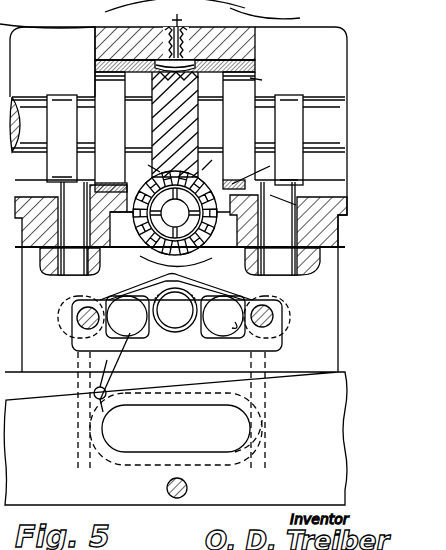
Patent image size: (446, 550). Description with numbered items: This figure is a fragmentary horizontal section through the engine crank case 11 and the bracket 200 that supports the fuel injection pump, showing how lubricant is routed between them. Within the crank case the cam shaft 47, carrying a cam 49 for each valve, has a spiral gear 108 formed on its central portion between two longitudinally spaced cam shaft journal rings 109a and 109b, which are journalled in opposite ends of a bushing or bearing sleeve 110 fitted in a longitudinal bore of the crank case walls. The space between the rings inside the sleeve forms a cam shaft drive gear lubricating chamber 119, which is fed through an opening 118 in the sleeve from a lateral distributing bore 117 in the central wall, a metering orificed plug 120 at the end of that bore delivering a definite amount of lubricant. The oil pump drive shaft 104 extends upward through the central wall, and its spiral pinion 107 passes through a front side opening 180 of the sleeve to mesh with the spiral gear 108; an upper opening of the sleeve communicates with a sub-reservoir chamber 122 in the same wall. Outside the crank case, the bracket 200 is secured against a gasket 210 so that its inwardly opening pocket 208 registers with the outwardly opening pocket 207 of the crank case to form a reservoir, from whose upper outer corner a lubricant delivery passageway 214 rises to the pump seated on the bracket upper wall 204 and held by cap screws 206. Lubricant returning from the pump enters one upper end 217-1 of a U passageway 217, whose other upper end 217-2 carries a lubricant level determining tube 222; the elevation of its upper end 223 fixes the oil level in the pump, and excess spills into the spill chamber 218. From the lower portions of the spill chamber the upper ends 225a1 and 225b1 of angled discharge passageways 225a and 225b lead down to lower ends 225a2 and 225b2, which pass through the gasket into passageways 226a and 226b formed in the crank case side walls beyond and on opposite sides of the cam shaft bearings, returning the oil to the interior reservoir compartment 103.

The compartment 103 is at (52, 62).
The bushing or bearing sleeve 110 is at (92, 64).
The opening 118 is at (158, 62).
The lateral distributing bore 117 is at (180, 25).
The metering orificed plug 120 is at (190, 22).
The cam shaft drive gear lubricating chamber 119 is at (298, 199).
The cam shaft journal ring 109a is at (112, 132).
The cam shaft journal ring 109b is at (241, 130).
The spiral gear 108 is at (178, 118).
The spiral pinion or gear 107 is at (212, 160).
The cam shaft 47 is at (320, 150).
The cam 49 is at (50, 175).
The front side opening 180 is at (265, 171).
The sub-reservoir chamber 122 is at (280, 194).
The passageway 226a is at (85, 215).
The passageway 226b is at (348, 196).
The crank case 11 is at (340, 222).
The drive shaft 104 is at (170, 222).
The outwardly opening pocket 207 is at (214, 218).
The gasket 210 is at (22, 262).
The lower end of discharge passageway 225a2 is at (72, 272).
The lower end of discharge passageway 225b2 is at (285, 270).
The spill chamber 218 is at (160, 286).
The inwardly opening pocket 208 is at (205, 258).
The upper end of discharge passageway 225a1 is at (100, 340).
The upper end of discharge passageway 225b1 is at (248, 325).
The angled discharge passageway 225a is at (88, 331).
The angled discharge passageway 225b is at (266, 330).
The upper end of level determining tube 223 is at (128, 320).
The lubricant level determining tube 222 is at (180, 318).
The upper end of U passageway 217-2 is at (176, 332).
The bracket 200 is at (338, 341).
The upper wall 204 is at (325, 421).
The U passageway 217 is at (240, 430).
The upper end of U passageway 217-1 is at (245, 455).
The lubricant delivery passageway 214 is at (103, 415).
The cap screw 206 is at (180, 499).